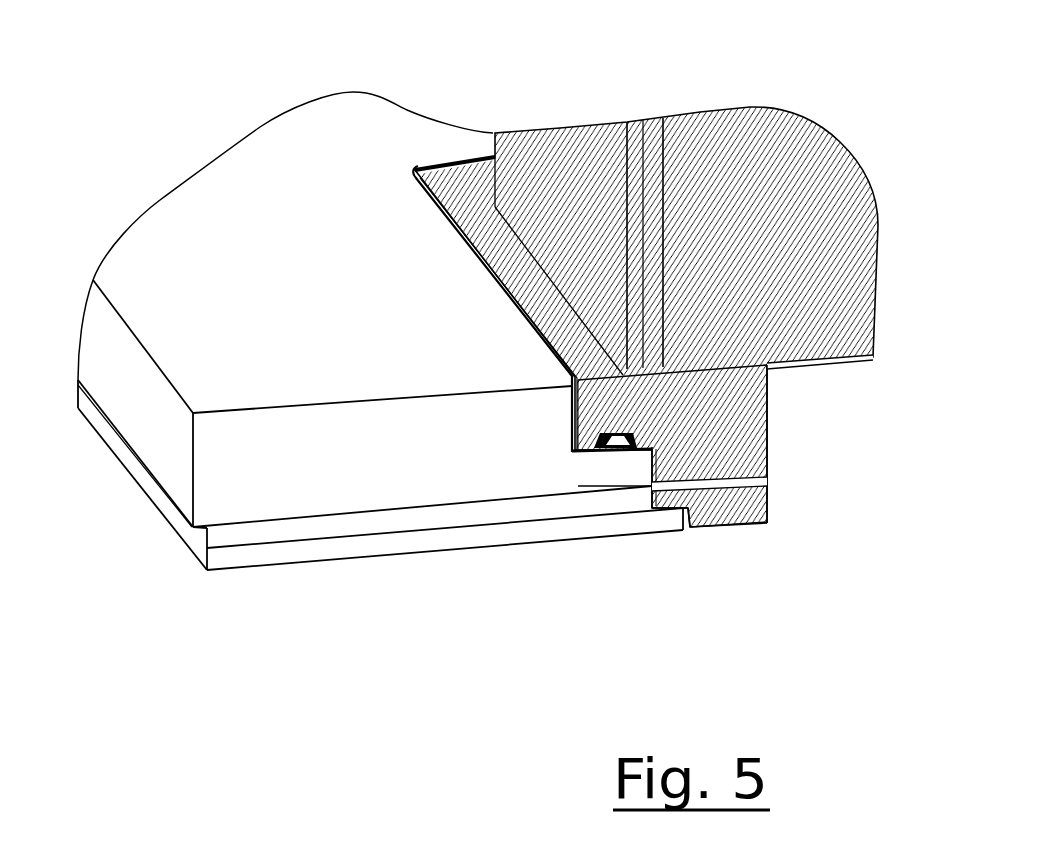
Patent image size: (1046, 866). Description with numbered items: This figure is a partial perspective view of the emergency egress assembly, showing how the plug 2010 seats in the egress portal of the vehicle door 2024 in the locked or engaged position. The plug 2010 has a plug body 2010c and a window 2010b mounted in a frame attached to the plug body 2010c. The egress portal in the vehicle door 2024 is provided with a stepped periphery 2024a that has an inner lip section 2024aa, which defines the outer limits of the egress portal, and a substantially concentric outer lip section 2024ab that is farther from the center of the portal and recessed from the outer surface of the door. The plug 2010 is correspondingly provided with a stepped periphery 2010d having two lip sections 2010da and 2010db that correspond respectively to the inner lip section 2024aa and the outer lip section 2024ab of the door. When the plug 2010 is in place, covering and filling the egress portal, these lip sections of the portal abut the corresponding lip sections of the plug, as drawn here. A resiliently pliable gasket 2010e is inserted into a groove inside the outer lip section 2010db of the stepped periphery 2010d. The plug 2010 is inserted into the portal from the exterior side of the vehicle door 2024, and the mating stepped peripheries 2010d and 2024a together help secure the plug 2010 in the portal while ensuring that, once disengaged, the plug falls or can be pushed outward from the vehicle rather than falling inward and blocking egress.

The plug 2010 is at (668, 91).
The window 2010b is at (542, 160).
The plug body 2010c is at (497, 262).
The stepped periphery of the plug 2010d is at (731, 541).
The lip section of the plug 2010da is at (767, 481).
The outer lip section of the plug 2010db is at (637, 445).
The gasket 2010e is at (592, 446).
The vehicle door 2024 is at (283, 602).
The stepped periphery of the egress portal 2024a is at (608, 548).
The inner lip section 2024aa is at (672, 513).
The outer lip section 2024ab is at (608, 457).